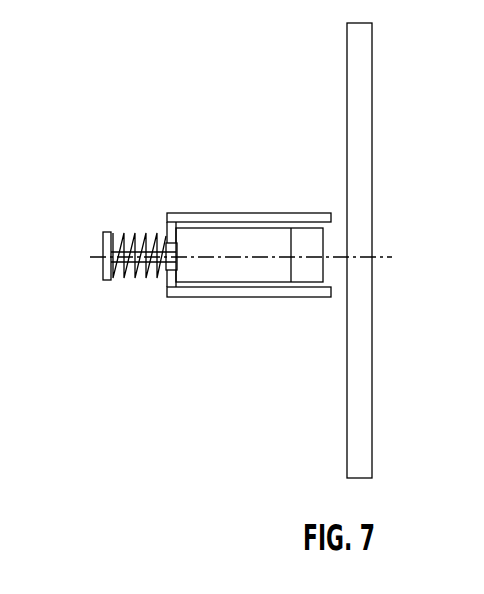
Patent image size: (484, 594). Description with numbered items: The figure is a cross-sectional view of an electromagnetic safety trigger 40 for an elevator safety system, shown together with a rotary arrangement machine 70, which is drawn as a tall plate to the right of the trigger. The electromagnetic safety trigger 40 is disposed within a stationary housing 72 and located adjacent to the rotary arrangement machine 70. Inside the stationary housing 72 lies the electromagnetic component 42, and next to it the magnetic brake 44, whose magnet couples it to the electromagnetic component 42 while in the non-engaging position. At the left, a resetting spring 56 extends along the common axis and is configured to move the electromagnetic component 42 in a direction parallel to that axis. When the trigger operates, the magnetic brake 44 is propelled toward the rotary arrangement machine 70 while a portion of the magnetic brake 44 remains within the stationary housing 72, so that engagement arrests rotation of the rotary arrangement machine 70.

The electromagnetic safety trigger 40 is at (128, 320).
The electromagnetic component 42 is at (212, 240).
The magnetic brake 44 is at (313, 240).
The resetting spring 56 is at (128, 216).
The rotary arrangement machine 70 is at (372, 115).
The stationary housing 72 is at (261, 297).